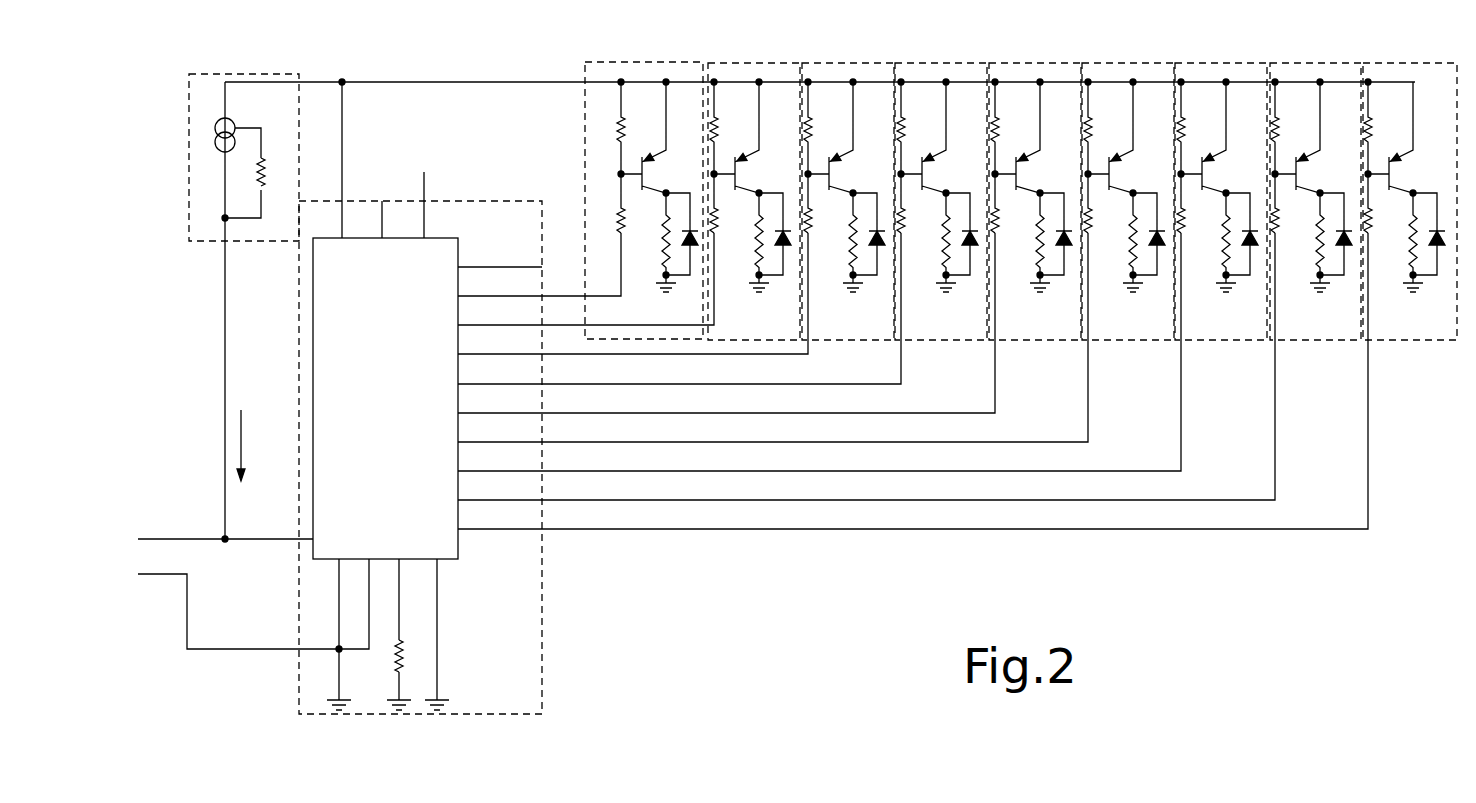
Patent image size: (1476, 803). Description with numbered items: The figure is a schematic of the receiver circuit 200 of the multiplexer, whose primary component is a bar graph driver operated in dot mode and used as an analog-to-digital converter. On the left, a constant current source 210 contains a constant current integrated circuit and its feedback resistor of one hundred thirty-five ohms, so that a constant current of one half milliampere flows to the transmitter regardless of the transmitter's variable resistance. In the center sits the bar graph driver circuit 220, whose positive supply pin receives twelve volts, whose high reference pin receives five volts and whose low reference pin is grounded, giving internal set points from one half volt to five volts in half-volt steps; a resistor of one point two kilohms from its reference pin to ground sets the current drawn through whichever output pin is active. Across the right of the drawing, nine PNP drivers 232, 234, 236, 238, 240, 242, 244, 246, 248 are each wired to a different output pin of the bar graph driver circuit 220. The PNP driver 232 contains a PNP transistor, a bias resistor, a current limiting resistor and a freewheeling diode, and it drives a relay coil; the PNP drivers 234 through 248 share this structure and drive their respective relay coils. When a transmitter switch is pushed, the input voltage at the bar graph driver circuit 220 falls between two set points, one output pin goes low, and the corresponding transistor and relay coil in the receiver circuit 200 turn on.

The receiver circuit 200 is at (753, 540).
The constant current source 210 is at (275, 123).
The bar graph driver circuit 220 is at (510, 574).
The PNP driver 232 is at (595, 181).
The PNP driver 234 is at (641, 181).
The PNP driver 236 is at (688, 188).
The PNP driver 238 is at (735, 203).
The PNP driver 240 is at (782, 218).
The PNP driver 242 is at (828, 232).
The PNP driver 244 is at (875, 247).
The PNP driver 246 is at (922, 261).
The PNP driver 248 is at (967, 276).